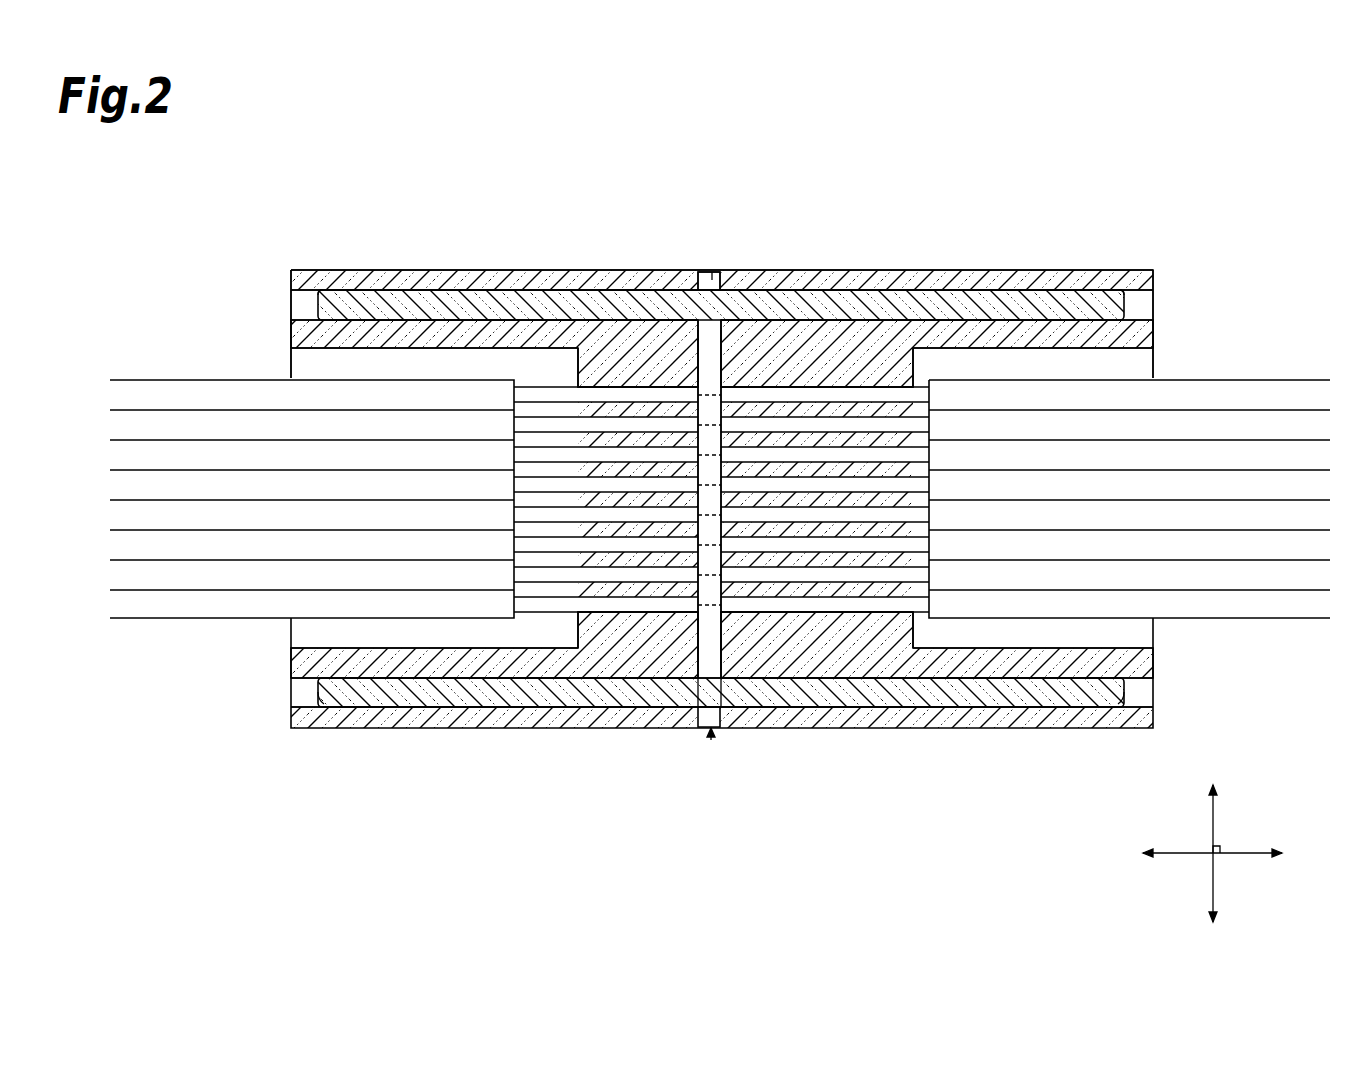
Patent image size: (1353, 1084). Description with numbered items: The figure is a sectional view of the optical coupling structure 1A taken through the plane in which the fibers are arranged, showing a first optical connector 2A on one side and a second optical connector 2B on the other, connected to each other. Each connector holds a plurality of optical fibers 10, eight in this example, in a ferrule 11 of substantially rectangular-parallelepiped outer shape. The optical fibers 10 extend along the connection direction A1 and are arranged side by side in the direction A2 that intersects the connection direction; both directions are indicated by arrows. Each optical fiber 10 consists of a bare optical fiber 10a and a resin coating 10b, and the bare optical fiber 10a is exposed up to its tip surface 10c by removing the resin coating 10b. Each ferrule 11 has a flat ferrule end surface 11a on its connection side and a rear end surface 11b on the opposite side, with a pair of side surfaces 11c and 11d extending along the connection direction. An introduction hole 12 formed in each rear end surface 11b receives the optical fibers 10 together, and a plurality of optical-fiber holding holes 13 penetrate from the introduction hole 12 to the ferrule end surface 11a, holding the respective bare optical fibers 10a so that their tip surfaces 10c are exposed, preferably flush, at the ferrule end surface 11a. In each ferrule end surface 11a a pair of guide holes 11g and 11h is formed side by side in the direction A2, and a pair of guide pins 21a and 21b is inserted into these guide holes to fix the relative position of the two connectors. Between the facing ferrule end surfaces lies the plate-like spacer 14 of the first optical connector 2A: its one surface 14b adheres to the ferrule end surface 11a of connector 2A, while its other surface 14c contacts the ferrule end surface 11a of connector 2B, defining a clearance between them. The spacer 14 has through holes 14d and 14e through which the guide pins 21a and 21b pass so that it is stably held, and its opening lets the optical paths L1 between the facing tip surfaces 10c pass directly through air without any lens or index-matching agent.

The optical coupling structure 1A is at (1006, 153).
The first optical connector 2A is at (1123, 243).
The second optical connector 2B is at (338, 243).
The optical fiber 10 is at (185, 378).
The bare optical fiber 10a is at (615, 400).
The resin coating 10b is at (205, 395).
The tip surface 10c is at (706, 271).
The ferrule 11 is at (412, 266).
The ferrule end surface 11a is at (732, 328).
The rear end surface 11b is at (290, 650).
The side surface 11c is at (900, 269).
The side surface 11d is at (528, 269).
The guide hole 11g is at (1126, 305).
The guide hole 11h is at (316, 305).
The introduction hole 12 is at (1135, 365).
The optical-fiber holding hole 13 is at (600, 604).
The spacer 14 is at (716, 700).
The one surface 14b is at (725, 340).
The other surface 14c is at (692, 380).
The through hole 14d is at (714, 290).
The through hole 14e is at (702, 692).
The guide pin 21a is at (985, 304).
The guide pin 21b is at (430, 708).
The optical path L1 is at (748, 606).
The connection direction A1 is at (1173, 856).
The direction intersecting the connection direction A2 is at (1215, 809).